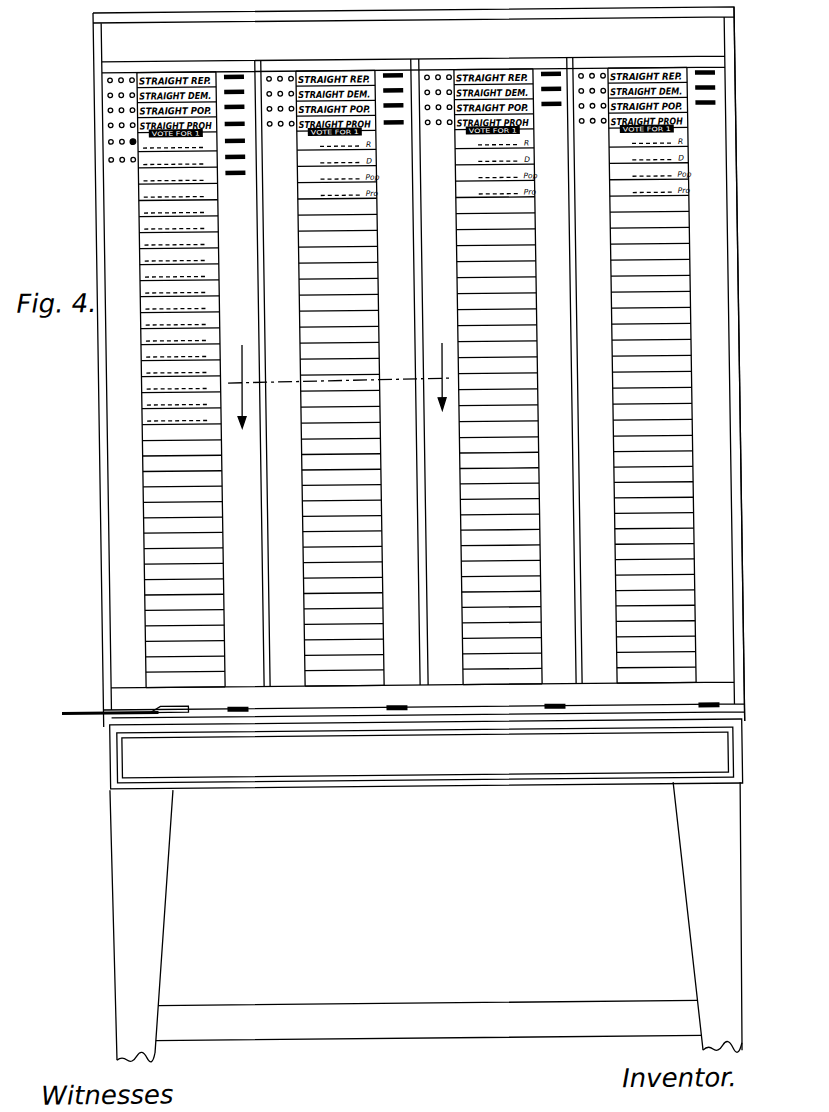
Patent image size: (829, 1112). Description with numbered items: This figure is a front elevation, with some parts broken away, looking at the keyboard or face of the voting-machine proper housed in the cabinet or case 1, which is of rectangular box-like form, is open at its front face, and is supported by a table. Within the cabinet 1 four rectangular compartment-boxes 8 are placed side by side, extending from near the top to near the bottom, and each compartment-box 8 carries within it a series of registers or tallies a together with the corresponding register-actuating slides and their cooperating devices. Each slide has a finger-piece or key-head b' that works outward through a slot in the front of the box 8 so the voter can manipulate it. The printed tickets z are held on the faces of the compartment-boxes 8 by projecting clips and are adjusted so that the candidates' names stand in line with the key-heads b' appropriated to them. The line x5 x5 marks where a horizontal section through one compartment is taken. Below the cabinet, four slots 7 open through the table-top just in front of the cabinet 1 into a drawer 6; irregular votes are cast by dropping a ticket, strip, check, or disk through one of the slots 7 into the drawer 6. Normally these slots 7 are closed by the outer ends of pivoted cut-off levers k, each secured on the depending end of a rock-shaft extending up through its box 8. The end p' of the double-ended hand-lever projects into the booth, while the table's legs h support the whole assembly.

The cabinet or case 1 is at (95, 148).
The slots 7 is at (734, 358).
The compartment-boxes 8 is at (114, 385).
The printed tickets z is at (624, 205).
The registers or tallies a is at (585, 132).
The finger-piece or key-head b' is at (473, 150).
The section line x5 is at (341, 372).
The cut-off levers k is at (702, 710).
The hand-lever end p' is at (114, 739).
The drawer 6 is at (649, 757).
The supporting legs h is at (685, 841).